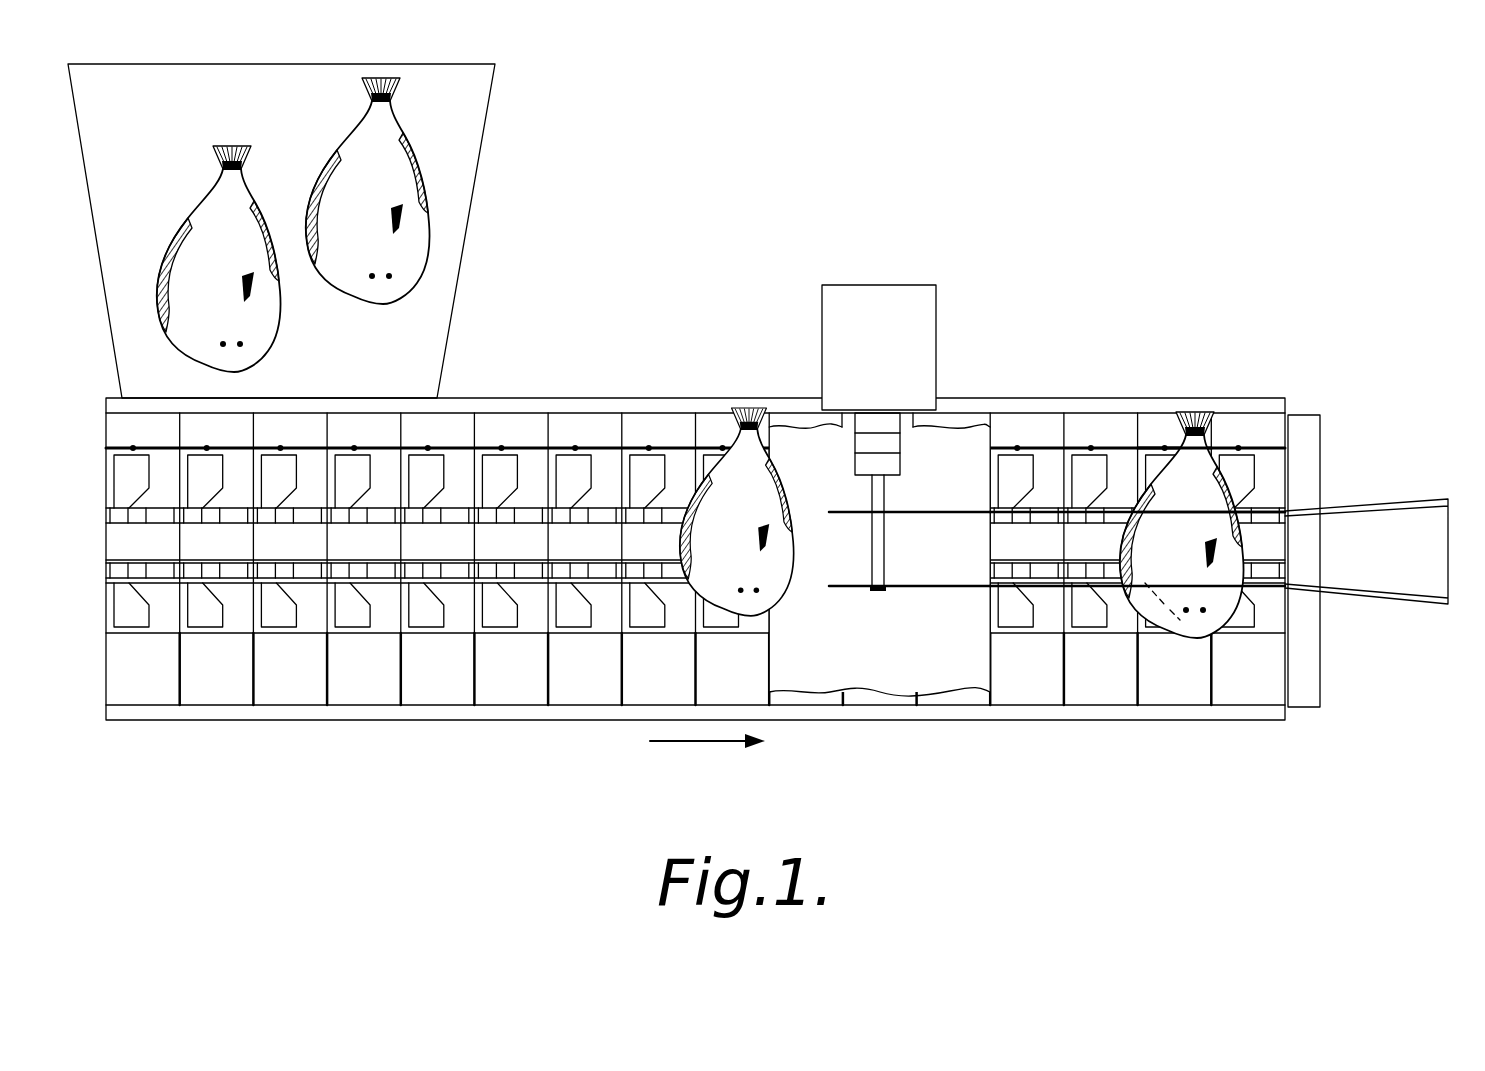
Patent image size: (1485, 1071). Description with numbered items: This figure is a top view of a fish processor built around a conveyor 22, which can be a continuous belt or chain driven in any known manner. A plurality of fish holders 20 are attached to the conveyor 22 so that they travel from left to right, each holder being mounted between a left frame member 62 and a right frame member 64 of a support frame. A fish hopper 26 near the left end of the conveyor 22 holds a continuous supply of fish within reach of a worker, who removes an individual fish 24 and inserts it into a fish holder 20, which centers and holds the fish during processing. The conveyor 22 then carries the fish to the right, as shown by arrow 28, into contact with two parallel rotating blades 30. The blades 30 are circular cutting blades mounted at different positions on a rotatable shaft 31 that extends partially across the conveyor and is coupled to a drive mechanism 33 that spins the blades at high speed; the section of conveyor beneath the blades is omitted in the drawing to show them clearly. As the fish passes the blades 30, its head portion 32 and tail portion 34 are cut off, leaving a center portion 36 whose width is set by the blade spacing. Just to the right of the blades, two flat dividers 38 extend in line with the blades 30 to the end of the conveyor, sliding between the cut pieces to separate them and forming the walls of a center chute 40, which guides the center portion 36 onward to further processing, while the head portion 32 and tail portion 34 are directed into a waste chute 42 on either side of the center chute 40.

The fish holder 20 is at (520, 482).
The conveyor 22 is at (465, 743).
The fish 24 is at (405, 236).
The fish hopper 26 is at (458, 138).
The arrow 28 is at (700, 745).
The rotating blades 30 is at (837, 510).
The rotatable shaft 31 is at (878, 592).
The head portion 32 is at (1193, 603).
The drive mechanism 33 is at (876, 302).
The tail portion 34 is at (1205, 460).
The center portion 36 is at (1240, 538).
The dividers 38 is at (963, 510).
The center chute 40 is at (1423, 605).
The waste chute 42 is at (1307, 693).
The left frame member 62 is at (583, 685).
The right frame member 64 is at (605, 432).